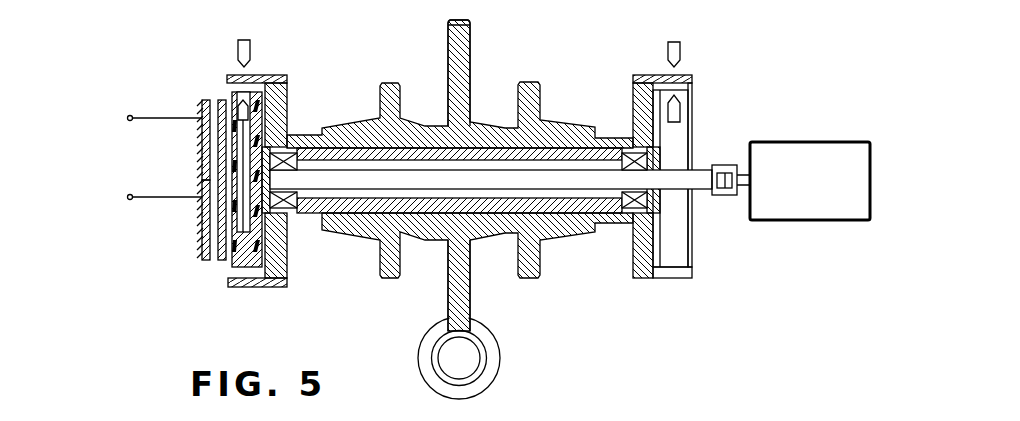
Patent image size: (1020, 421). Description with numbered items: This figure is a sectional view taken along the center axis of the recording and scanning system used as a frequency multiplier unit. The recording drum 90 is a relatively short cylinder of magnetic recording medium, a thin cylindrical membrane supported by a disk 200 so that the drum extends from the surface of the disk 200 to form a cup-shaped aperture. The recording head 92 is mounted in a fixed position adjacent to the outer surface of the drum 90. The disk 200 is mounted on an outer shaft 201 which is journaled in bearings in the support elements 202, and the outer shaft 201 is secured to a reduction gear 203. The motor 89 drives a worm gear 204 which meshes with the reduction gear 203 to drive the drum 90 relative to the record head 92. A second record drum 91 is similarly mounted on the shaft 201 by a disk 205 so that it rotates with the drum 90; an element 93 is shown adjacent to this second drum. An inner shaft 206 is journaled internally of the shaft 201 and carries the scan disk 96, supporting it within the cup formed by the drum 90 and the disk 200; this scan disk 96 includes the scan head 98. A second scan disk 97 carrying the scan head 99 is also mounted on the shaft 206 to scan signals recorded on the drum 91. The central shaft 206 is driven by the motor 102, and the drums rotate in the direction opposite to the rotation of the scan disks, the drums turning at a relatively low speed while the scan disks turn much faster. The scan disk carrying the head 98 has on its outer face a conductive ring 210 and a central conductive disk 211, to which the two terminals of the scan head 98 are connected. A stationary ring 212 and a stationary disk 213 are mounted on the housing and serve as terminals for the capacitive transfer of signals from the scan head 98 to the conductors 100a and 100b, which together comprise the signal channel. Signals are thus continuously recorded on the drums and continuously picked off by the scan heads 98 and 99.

The motor 89 is at (488, 335).
The recording drum 90 is at (266, 75).
The second record drum 91 is at (660, 75).
The recording head 92 is at (247, 40).
The pointer 93 is at (678, 42).
The scan disk 96 is at (249, 265).
The second scan disk 97 is at (685, 235).
The scan head 98 is at (240, 102).
The scan head 99 is at (681, 107).
The conductor 100a is at (167, 118).
The conductor 100b is at (162, 196).
The motor 102 is at (833, 142).
The disk 200 is at (282, 102).
The outer shaft 201 is at (355, 155).
The support elements 202 is at (378, 265).
The reduction gear 203 is at (470, 53).
The worm gear 204 is at (470, 360).
The disk 205 is at (633, 95).
The inner shaft 206 is at (581, 180).
The conductive ring 210 is at (223, 265).
The central conductive disk 211 is at (223, 200).
The stationary ring 212 is at (200, 253).
The stationary disk 213 is at (202, 157).